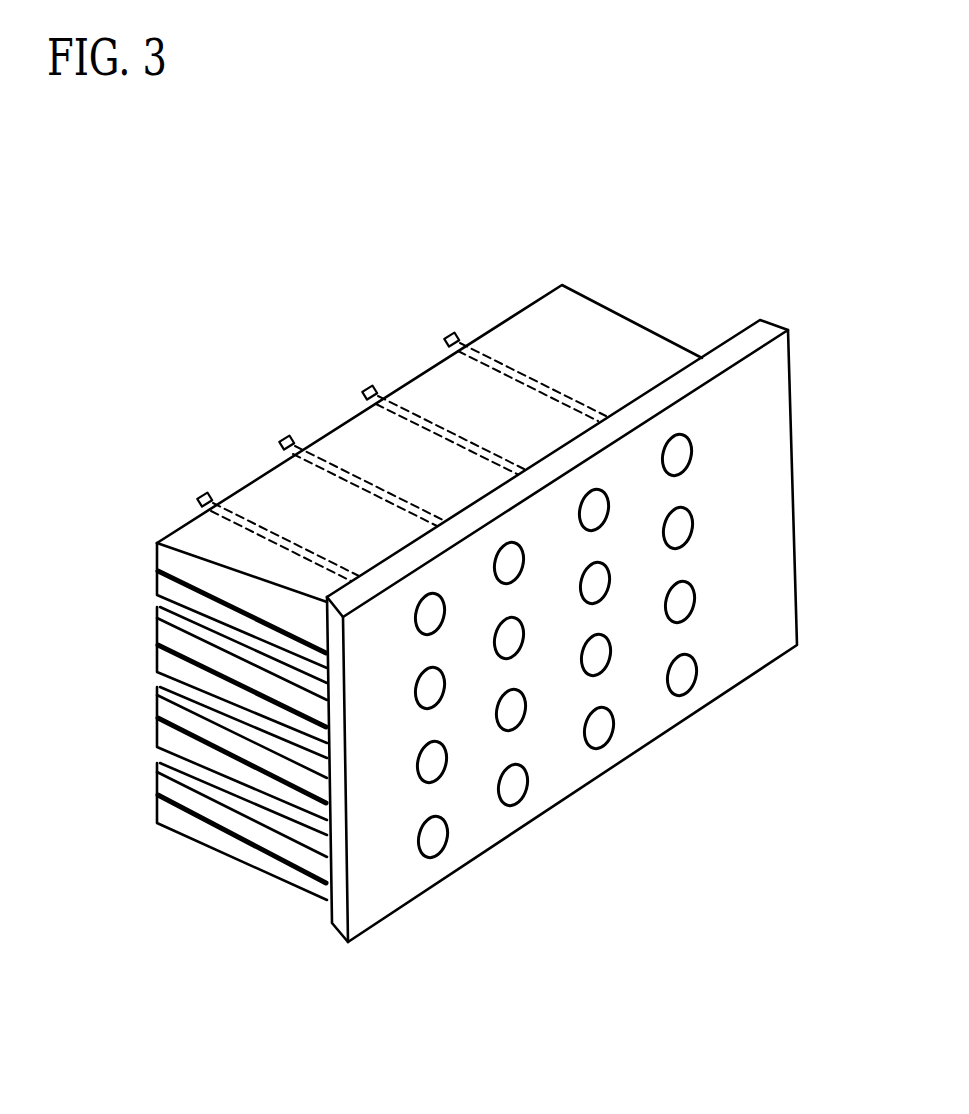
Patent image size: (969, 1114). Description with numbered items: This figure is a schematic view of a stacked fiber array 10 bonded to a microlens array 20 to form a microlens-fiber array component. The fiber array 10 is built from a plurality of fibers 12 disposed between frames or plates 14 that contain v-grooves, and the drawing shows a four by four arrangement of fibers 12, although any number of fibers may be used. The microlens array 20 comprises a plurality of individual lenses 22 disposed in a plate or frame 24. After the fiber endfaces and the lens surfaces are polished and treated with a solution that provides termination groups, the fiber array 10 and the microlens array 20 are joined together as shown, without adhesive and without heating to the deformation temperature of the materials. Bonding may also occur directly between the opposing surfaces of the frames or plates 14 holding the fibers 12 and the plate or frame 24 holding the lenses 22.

The fiber array 10 is at (590, 303).
The fibers 12 is at (443, 342).
The frames or plates 14 is at (157, 562).
The microlens array 20 is at (460, 868).
The individual lenses 22 is at (683, 672).
The plate or frame 24 is at (642, 725).